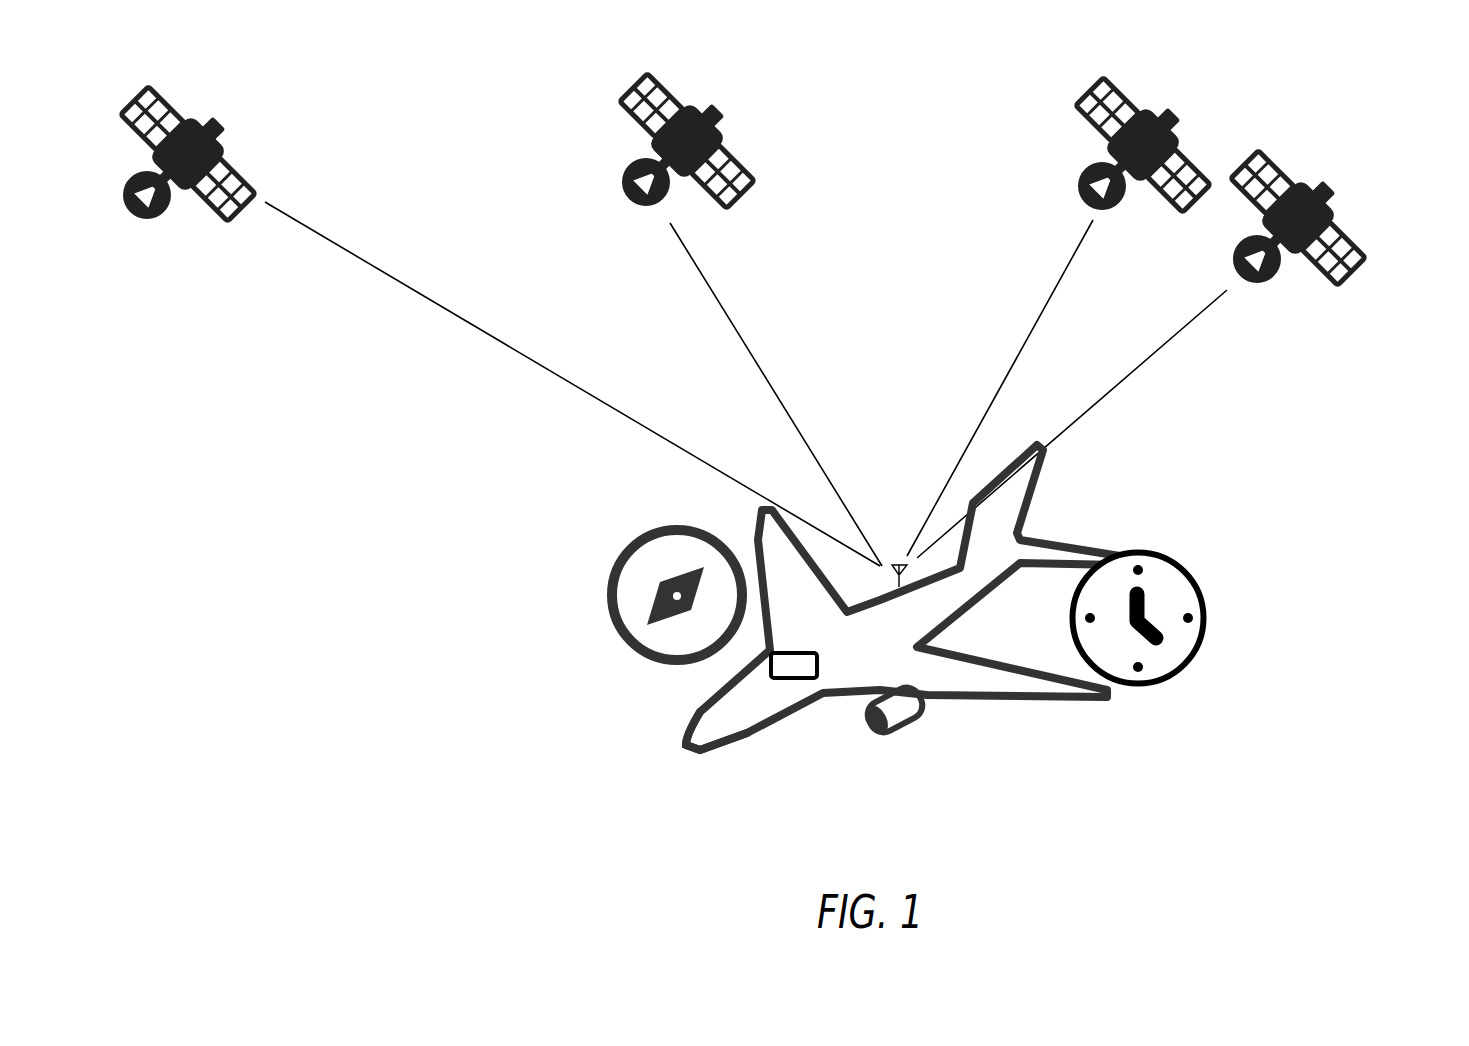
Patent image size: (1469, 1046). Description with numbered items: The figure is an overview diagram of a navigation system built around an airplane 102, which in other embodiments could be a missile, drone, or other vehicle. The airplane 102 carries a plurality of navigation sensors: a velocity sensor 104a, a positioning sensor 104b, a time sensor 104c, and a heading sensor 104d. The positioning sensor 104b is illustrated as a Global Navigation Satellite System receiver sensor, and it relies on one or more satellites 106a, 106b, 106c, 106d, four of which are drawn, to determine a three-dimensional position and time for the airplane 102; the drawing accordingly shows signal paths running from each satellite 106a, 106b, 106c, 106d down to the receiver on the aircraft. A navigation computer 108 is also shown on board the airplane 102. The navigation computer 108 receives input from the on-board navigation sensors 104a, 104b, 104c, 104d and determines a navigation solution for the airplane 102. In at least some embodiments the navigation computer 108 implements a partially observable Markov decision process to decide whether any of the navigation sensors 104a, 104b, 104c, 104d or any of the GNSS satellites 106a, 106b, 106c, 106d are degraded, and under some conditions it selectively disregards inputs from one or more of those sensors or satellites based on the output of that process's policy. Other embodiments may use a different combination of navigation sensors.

The airplane 102 is at (988, 697).
The velocity sensor 104a is at (740, 742).
The positioning sensor 104b is at (890, 540).
The time sensor 104c is at (1180, 673).
The heading sensor 104d is at (600, 594).
The satellite 106a is at (223, 122).
The satellite 106b is at (728, 122).
The satellite 106c is at (1182, 125).
The satellite 106d is at (1338, 197).
The navigation computer 108 is at (784, 678).